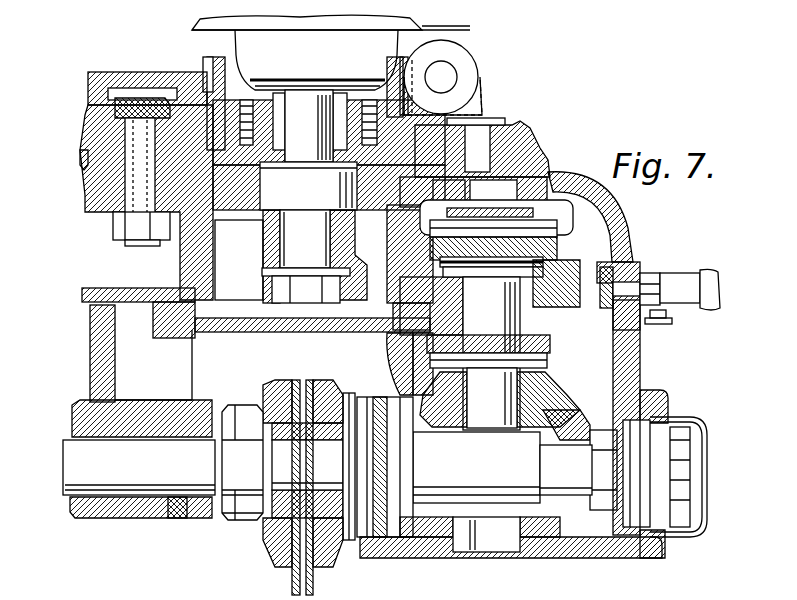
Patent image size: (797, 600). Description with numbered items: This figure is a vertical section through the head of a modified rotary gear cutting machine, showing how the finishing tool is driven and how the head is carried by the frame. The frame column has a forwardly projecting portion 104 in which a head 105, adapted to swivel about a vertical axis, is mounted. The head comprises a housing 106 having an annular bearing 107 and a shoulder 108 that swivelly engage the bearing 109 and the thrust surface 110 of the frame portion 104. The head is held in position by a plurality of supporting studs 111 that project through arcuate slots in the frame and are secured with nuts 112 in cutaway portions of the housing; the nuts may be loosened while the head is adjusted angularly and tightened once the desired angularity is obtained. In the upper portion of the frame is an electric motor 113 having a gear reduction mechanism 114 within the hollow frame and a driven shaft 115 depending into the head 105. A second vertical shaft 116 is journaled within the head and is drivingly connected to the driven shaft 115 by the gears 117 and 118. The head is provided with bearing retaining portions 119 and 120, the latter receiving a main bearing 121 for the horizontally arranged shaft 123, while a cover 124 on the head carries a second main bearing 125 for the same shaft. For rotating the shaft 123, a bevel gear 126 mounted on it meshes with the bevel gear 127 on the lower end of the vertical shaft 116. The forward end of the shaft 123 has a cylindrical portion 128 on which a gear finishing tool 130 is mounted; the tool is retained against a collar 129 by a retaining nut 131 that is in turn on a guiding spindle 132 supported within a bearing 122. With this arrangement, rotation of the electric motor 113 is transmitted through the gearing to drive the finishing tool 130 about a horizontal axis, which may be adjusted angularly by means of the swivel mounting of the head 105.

The forwardly projecting portion 104 is at (123, 74).
The head 105 is at (641, 345).
The housing 106 is at (643, 203).
The annular bearing 107 is at (415, 124).
The shoulder 108 is at (87, 157).
The bearing 109 is at (190, 80).
The thrust surface 110 is at (97, 208).
The supporting stud 111 is at (113, 137).
The nut 112 is at (143, 247).
The electric motor 113 is at (362, 45).
The gear reduction mechanism 114 is at (445, 29).
The driven shaft 115 is at (302, 107).
The second vertical shaft 116 is at (497, 316).
The gear 117 is at (338, 248).
The gear 118 is at (570, 305).
The bearing retaining portion 119 is at (133, 417).
The bearing retaining portion 120 is at (410, 367).
The main bearing 121 is at (395, 471).
The bearing 122 is at (107, 518).
The shaft 123 is at (478, 482).
The cover 124 is at (660, 345).
The second main bearing 125 is at (693, 436).
The bevel gear 126 is at (568, 432).
The bevel gear 127 is at (535, 395).
The cylindrical portion 128 is at (262, 508).
The collar 129 is at (356, 393).
The gear finishing tool 130 is at (314, 582).
The retaining nut 131 is at (242, 413).
The guiding spindle 132 is at (177, 475).